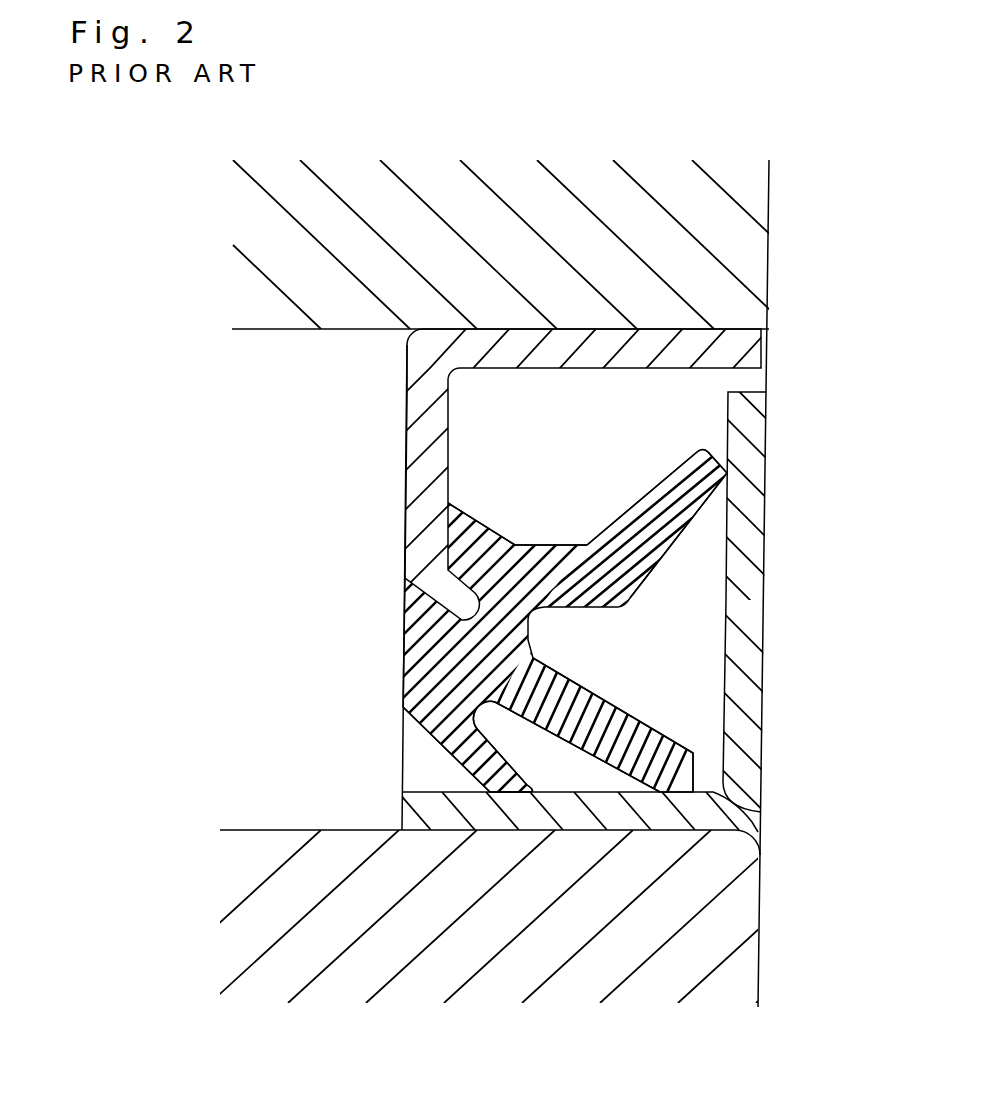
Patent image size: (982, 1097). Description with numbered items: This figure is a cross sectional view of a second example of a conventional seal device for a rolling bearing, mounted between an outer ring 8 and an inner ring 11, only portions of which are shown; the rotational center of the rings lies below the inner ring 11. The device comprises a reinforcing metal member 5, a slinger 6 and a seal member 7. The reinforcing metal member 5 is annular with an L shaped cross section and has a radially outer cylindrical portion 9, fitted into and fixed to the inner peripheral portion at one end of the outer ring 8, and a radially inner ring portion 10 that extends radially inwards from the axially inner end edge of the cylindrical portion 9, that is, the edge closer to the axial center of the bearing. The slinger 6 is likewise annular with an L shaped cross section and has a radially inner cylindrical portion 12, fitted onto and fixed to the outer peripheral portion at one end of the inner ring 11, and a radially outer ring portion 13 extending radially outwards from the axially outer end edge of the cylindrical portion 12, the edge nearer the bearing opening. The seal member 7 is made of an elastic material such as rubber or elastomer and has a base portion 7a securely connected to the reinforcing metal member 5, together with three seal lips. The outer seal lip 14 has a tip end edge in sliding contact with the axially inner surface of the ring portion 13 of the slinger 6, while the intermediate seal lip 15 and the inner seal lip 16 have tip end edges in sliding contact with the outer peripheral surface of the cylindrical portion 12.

The reinforcing metal member 5 is at (733, 343).
The slinger 6 is at (747, 573).
The seal member 7 is at (404, 652).
The base portion 7a is at (492, 603).
The outer ring 8 is at (706, 289).
The radially outer cylindrical portion 9 is at (535, 358).
The radially inner ring portion 10 is at (415, 487).
The inner ring 11 is at (715, 940).
The radially inner cylindrical portion 12 is at (457, 823).
The radially outer ring portion 13 is at (745, 708).
The outer seal lip 14 is at (678, 501).
The intermediate seal lip 15 is at (648, 758).
The inner seal lip 16 is at (457, 747).